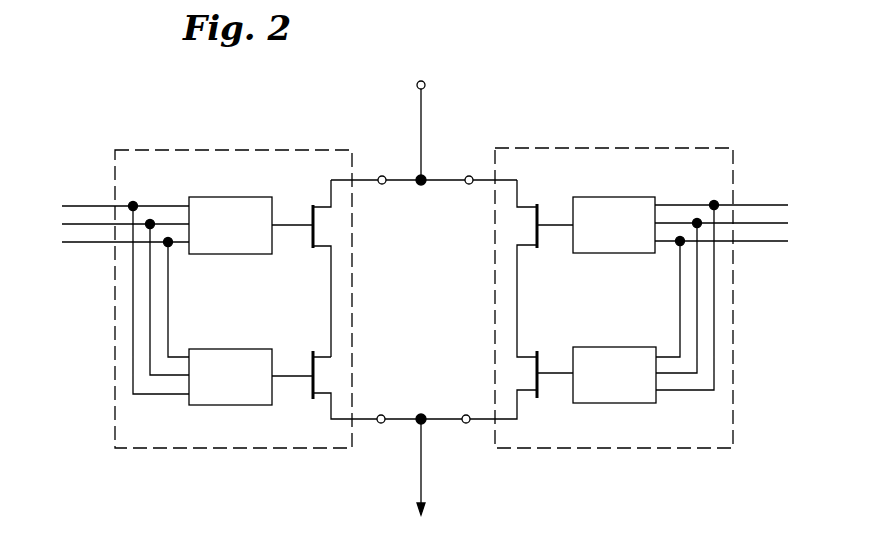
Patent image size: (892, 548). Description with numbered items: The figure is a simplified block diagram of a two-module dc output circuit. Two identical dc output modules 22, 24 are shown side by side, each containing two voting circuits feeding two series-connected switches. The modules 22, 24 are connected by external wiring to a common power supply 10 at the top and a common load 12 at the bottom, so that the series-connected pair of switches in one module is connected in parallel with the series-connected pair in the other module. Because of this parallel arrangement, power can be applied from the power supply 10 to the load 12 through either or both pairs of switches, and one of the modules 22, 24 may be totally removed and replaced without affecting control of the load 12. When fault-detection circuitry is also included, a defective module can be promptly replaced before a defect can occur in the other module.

The power supply 10 is at (424, 124).
The load 12 is at (423, 477).
The dc output module 22 is at (297, 150).
The dc output module 24 is at (688, 148).